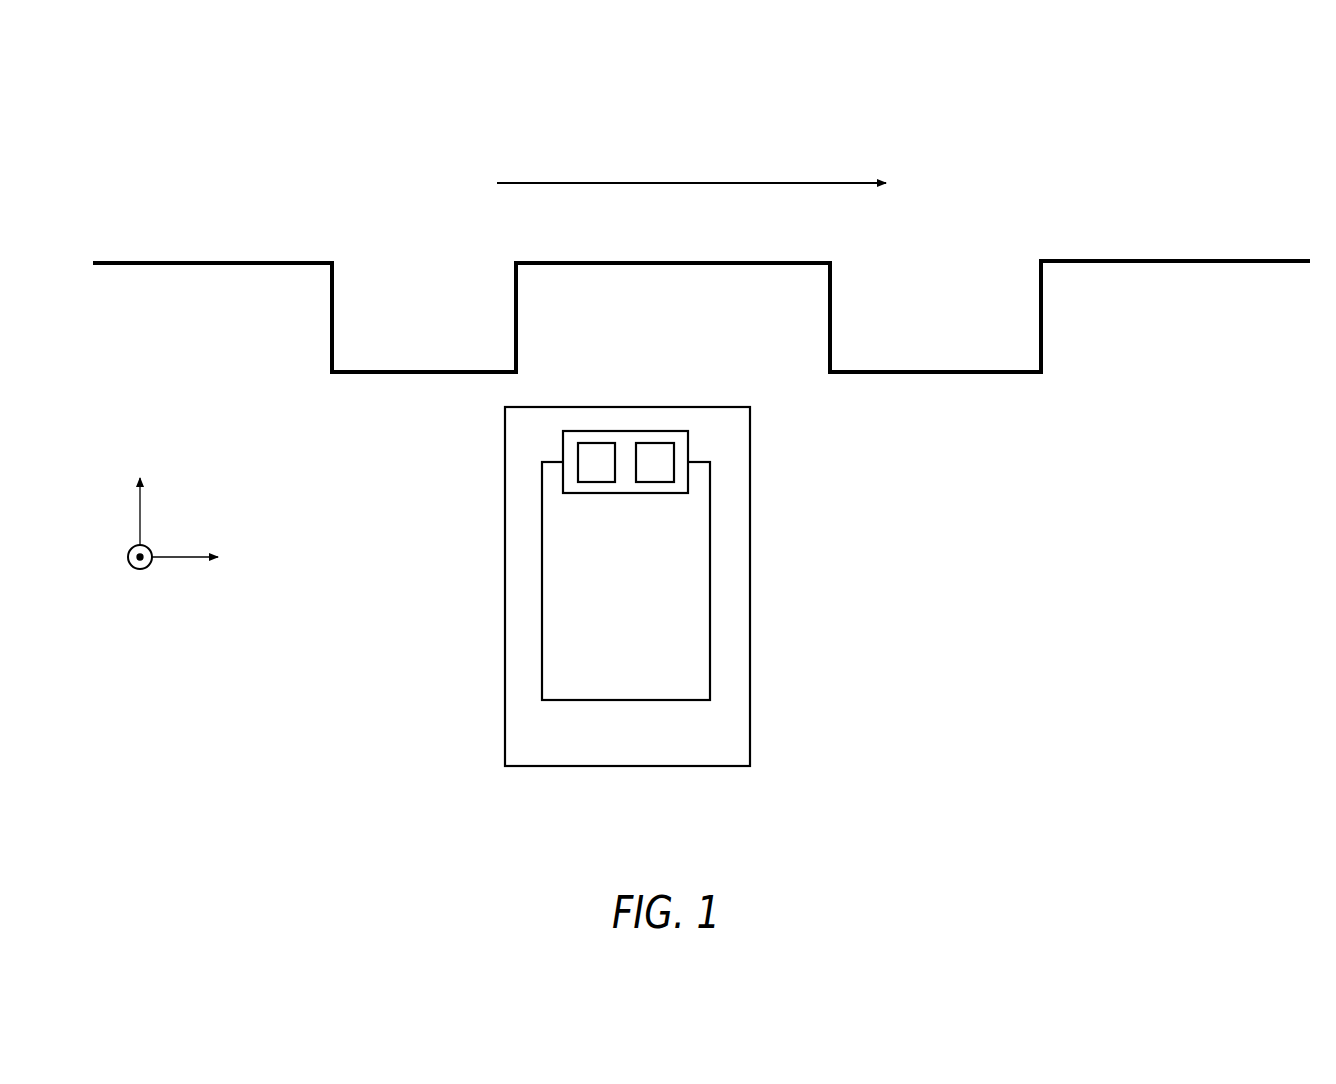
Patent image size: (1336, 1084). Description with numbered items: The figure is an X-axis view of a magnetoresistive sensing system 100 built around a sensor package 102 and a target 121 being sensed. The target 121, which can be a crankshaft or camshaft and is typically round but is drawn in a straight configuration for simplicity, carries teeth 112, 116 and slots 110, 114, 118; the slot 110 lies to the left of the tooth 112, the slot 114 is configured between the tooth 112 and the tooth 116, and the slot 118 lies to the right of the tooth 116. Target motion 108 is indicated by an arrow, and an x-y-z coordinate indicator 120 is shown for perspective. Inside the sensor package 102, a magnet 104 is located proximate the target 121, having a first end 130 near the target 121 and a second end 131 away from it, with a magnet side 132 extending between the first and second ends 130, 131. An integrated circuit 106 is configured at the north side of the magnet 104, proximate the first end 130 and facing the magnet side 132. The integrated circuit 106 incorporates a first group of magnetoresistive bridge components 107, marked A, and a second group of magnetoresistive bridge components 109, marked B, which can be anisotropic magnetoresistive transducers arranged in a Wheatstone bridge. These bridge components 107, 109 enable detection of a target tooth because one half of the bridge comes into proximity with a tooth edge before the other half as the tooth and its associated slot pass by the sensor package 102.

The magnetoresistive sensing system 100 is at (1230, 788).
The sensor package 102 is at (575, 745).
The magnet 104 is at (592, 533).
The integrated circuit (IC) 106 is at (630, 431).
The first group of magnetoresistive bridge components 107 is at (607, 450).
The target motion 108 is at (762, 185).
The second group of magnetoresistive bridge components 109 is at (667, 463).
The slot 110 is at (185, 345).
The tooth 112 is at (433, 285).
The slot 114 is at (758, 318).
The tooth 116 is at (945, 282).
The slot 118 is at (1175, 322).
The x-y-z coordinate indicator 120 is at (152, 574).
The target 121 is at (245, 208).
The first end of magnet 130 is at (560, 462).
The second end of magnet 131 is at (693, 705).
The magnet side 132 is at (665, 570).